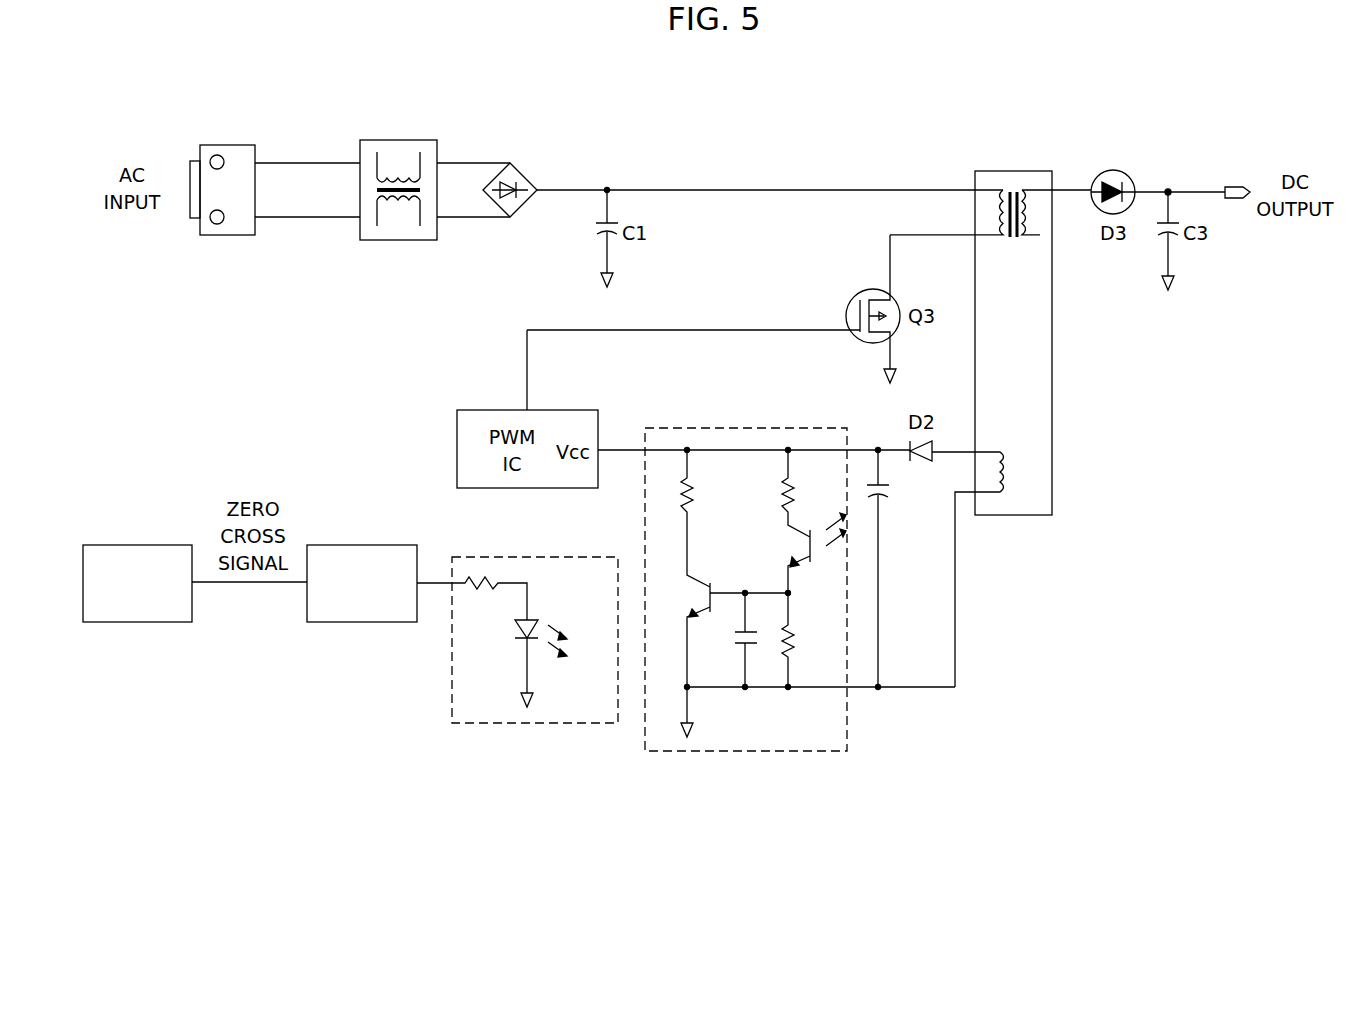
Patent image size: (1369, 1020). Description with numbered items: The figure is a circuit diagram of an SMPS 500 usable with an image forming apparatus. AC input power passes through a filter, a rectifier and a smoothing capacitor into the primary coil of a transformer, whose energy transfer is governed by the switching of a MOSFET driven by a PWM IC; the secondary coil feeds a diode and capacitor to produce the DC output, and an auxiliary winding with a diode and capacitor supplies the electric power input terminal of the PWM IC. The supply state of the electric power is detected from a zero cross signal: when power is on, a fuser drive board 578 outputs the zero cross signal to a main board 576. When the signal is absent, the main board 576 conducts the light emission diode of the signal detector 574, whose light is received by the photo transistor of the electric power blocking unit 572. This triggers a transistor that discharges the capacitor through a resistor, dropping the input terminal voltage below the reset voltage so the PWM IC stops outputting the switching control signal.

The SMPS 500 is at (818, 142).
The electric power blocking unit 572 is at (762, 428).
The signal detector 574 is at (550, 557).
The main board 576 is at (363, 545).
The fuser drive board 578 is at (140, 545).